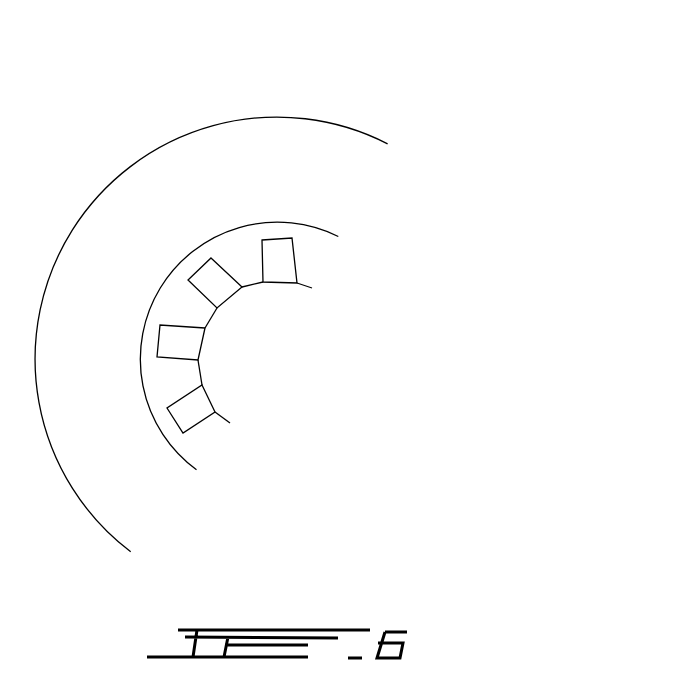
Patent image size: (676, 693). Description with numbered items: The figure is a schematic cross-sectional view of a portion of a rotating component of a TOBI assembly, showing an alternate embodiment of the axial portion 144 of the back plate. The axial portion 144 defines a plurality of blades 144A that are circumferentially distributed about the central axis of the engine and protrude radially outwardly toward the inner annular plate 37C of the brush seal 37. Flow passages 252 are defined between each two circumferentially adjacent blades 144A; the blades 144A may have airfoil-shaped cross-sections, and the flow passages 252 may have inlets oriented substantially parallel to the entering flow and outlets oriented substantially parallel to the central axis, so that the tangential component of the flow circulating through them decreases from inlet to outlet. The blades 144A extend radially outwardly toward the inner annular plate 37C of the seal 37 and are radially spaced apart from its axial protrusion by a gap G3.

The seal 37 is at (403, 123).
The inner annular plate 37C is at (296, 185).
The gap G3 is at (288, 230).
The blades 144A is at (366, 275).
The axial portion of the back plate 144 is at (332, 309).
The flow passages 252 is at (188, 315).